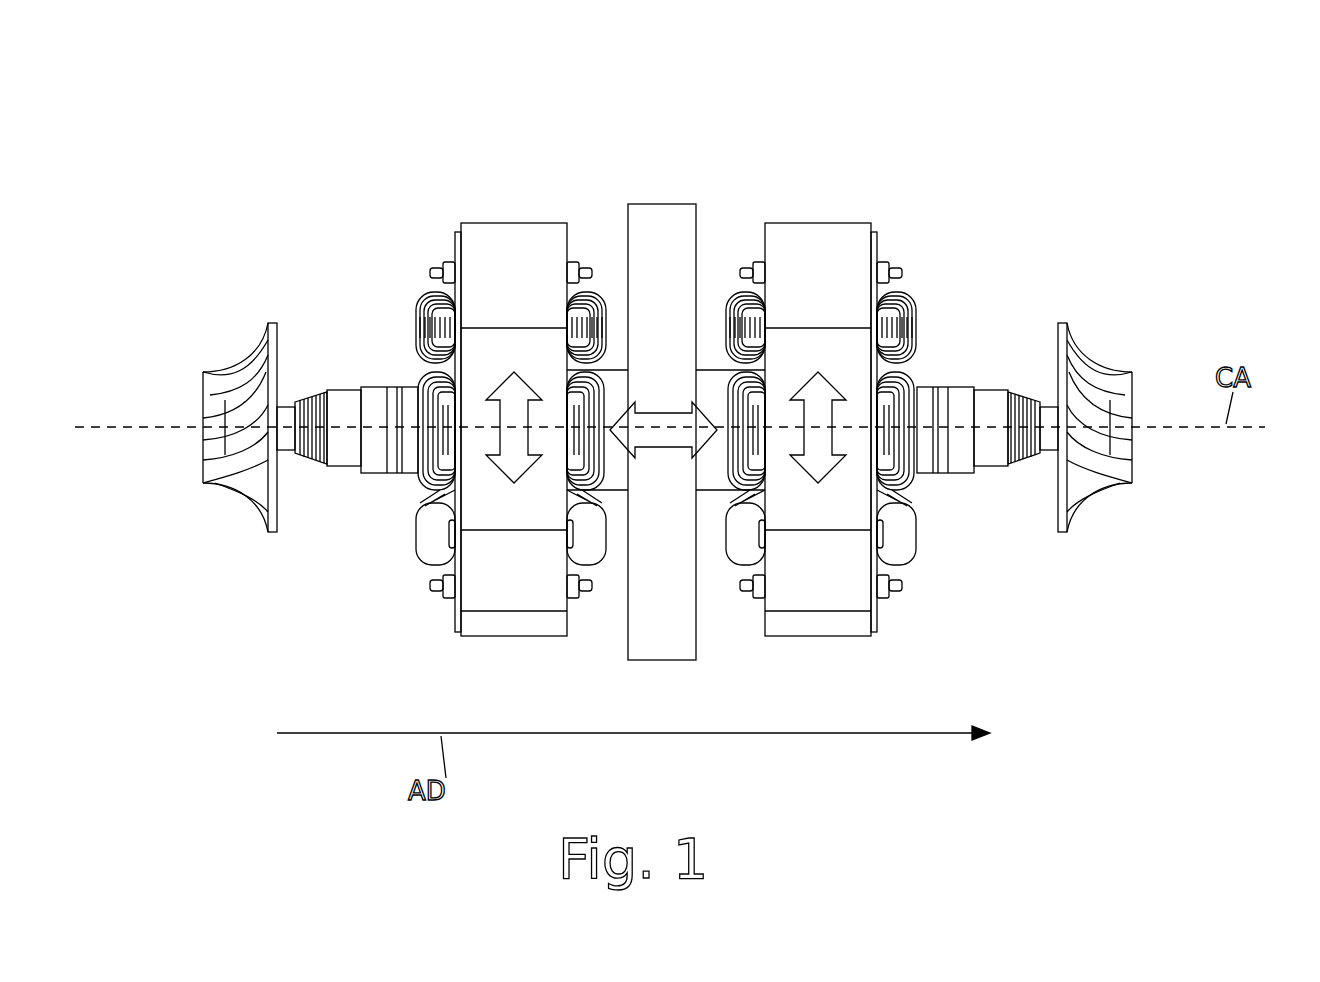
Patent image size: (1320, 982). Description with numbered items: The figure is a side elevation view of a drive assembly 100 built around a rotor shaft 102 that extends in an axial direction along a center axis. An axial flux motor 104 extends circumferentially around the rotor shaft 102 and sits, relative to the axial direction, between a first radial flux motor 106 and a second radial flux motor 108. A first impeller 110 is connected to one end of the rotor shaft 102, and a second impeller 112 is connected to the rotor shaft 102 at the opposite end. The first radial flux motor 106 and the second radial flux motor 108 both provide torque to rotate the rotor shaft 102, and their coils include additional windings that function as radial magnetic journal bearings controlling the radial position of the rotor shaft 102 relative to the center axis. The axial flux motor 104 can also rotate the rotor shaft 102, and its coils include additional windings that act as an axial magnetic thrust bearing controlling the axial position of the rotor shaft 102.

The drive assembly 100 is at (528, 126).
The rotor shaft 102 is at (411, 394).
The axial flux motor 104 is at (713, 196).
The first radial flux motor 106 is at (418, 276).
The second radial flux motor 108 is at (902, 258).
The first impeller 110 is at (212, 370).
The second impeller 112 is at (1120, 370).